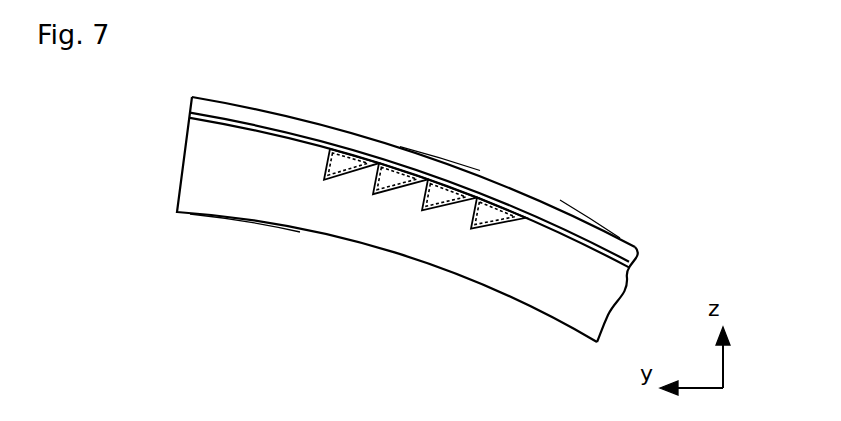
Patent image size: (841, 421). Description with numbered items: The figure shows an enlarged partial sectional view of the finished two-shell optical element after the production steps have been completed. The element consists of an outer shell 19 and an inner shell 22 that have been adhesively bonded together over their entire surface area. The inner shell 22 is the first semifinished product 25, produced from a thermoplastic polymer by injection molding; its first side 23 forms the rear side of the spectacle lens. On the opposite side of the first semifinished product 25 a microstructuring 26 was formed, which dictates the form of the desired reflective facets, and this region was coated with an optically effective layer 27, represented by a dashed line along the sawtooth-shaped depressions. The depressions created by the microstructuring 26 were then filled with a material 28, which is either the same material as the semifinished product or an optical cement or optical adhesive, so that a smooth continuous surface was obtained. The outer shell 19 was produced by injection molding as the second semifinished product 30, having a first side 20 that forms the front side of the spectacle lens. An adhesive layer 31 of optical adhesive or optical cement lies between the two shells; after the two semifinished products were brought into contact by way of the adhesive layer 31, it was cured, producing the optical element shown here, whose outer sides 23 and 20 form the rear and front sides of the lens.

The outer shell 19 is at (547, 208).
The first side 20 is at (597, 223).
The inner shell 22 is at (187, 193).
The first side 23 is at (212, 220).
The first semifinished product 25 is at (183, 152).
The microstructuring 26 is at (438, 210).
The optically effective layer 27 is at (503, 223).
The material 28 is at (350, 162).
The second semifinished product 30 is at (190, 100).
The adhesive layer 31 is at (188, 115).